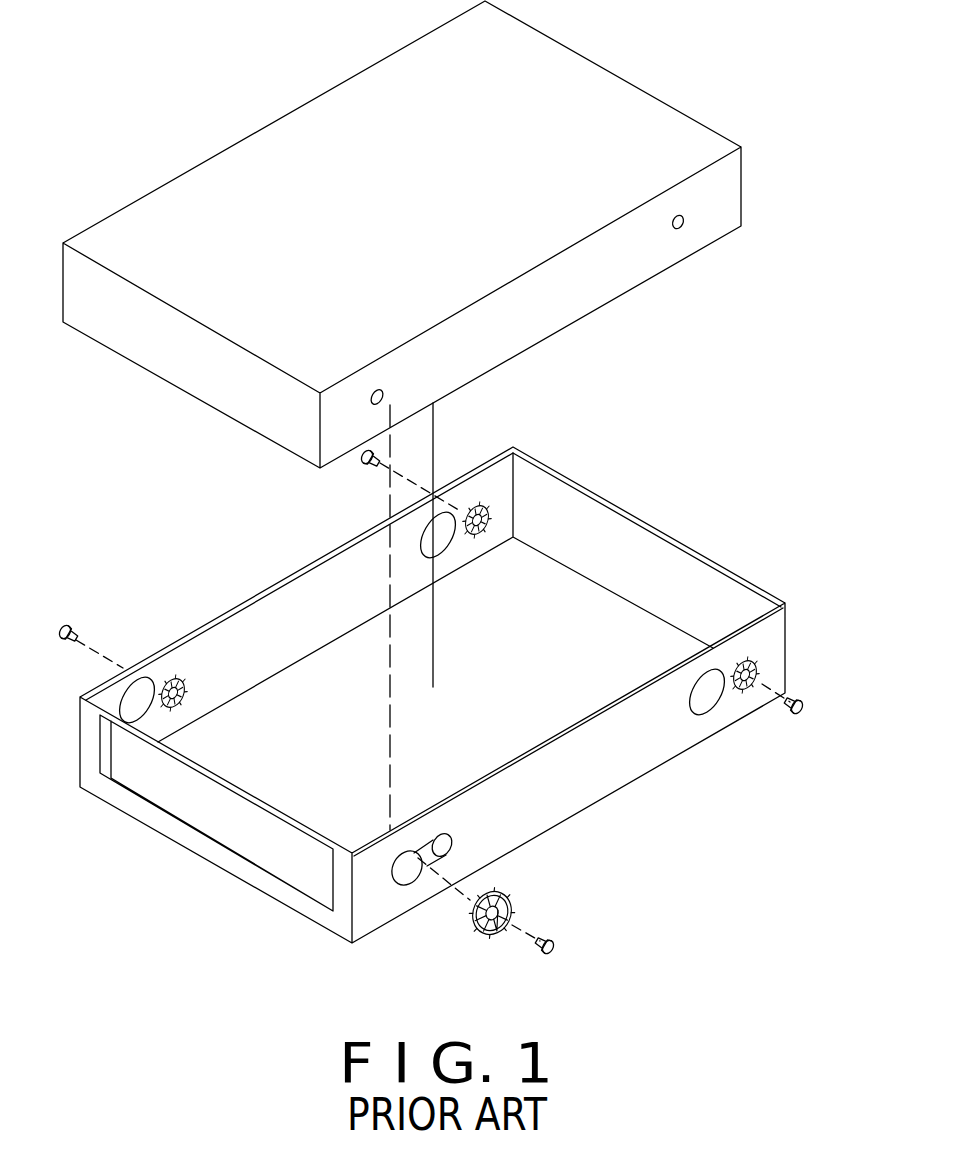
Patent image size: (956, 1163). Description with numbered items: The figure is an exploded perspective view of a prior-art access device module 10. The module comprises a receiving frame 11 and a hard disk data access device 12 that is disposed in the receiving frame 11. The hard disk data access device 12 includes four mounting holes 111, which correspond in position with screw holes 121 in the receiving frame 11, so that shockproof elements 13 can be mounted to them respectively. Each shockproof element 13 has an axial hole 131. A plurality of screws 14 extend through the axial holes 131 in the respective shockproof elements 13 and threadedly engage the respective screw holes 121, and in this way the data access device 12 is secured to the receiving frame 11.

The access device module 10 is at (805, 194).
The receiving frame 11 is at (431, 691).
The mounting holes 111 is at (730, 700).
The hard disk data access device 12 is at (293, 155).
The screw holes 121 is at (371, 399).
The shockproof elements 13 is at (526, 931).
The axial holes 131 is at (505, 932).
The screws 14 is at (554, 958).